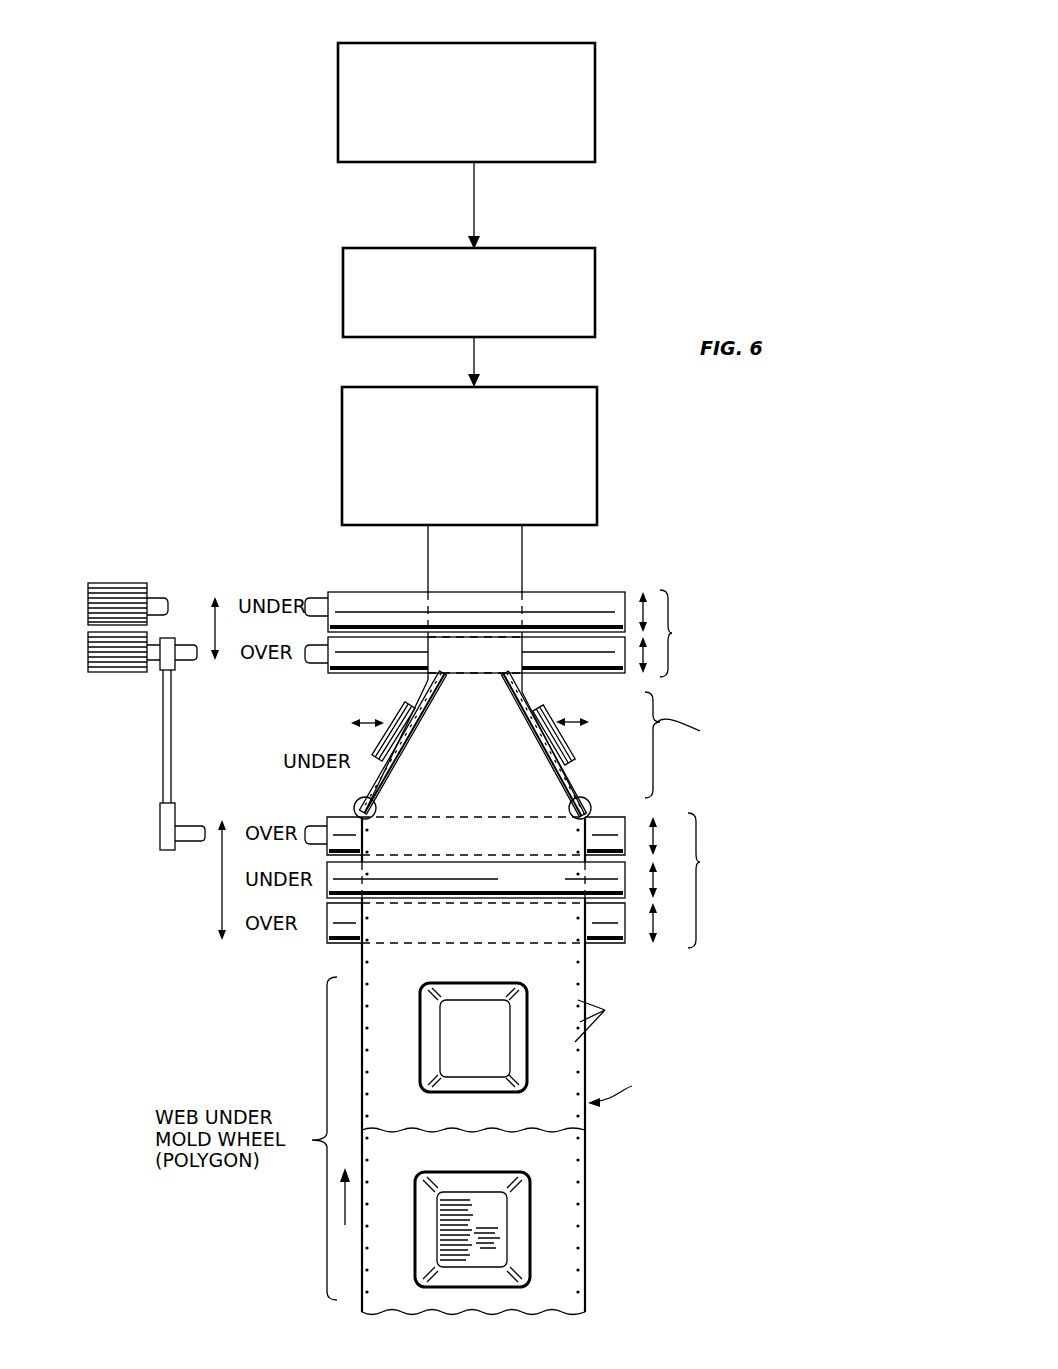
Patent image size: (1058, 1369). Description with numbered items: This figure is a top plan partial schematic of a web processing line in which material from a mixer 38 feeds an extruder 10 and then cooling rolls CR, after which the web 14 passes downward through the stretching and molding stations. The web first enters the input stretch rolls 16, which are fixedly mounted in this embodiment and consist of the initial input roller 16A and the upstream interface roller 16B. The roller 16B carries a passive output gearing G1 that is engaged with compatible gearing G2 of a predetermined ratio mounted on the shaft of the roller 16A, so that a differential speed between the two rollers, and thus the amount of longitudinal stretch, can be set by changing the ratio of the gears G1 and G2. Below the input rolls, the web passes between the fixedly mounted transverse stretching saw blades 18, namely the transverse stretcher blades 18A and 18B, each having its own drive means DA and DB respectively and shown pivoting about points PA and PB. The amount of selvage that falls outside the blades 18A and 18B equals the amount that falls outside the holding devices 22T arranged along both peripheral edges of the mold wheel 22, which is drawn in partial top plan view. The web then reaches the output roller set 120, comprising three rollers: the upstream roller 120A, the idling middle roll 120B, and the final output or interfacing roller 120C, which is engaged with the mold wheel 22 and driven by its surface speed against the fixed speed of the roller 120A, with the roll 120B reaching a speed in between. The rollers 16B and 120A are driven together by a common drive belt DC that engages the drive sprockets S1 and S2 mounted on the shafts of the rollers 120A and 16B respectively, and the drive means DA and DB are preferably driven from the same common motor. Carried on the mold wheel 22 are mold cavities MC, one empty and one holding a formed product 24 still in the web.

The mixer 38 is at (585, 85).
The extruder 10 is at (562, 322).
The cooling rolls CR is at (484, 505).
The web 14 is at (558, 1148).
The input stretch rolls 16 is at (826, 647).
The initial input roller 16A is at (598, 603).
The upstream interface roller 16B is at (582, 673).
The transverse stretching saw blades 18 is at (878, 754).
The transverse stretcher blade 18A is at (523, 778).
The transverse stretcher blade 18B is at (433, 712).
The drive means DA is at (572, 757).
The drive means DB is at (382, 744).
The pivot PA is at (585, 803).
The pivot PB is at (365, 800).
The output roller set 120 is at (912, 859).
The upstream roller 120A is at (620, 820).
The middle roll 120B is at (476, 880).
The final output or interfacing roller 120C is at (612, 945).
The passive output gearing G1 is at (90, 652).
The compatible gearing G2 is at (90, 602).
The drive sprocket S1 is at (162, 848).
The drive sprocket S2 is at (163, 672).
The common drive belt DC is at (166, 722).
The holding devices 22T is at (612, 1020).
The mold wheel 22 is at (623, 1091).
The mold cavity MC is at (468, 1020).
The formed product 24 is at (457, 1192).